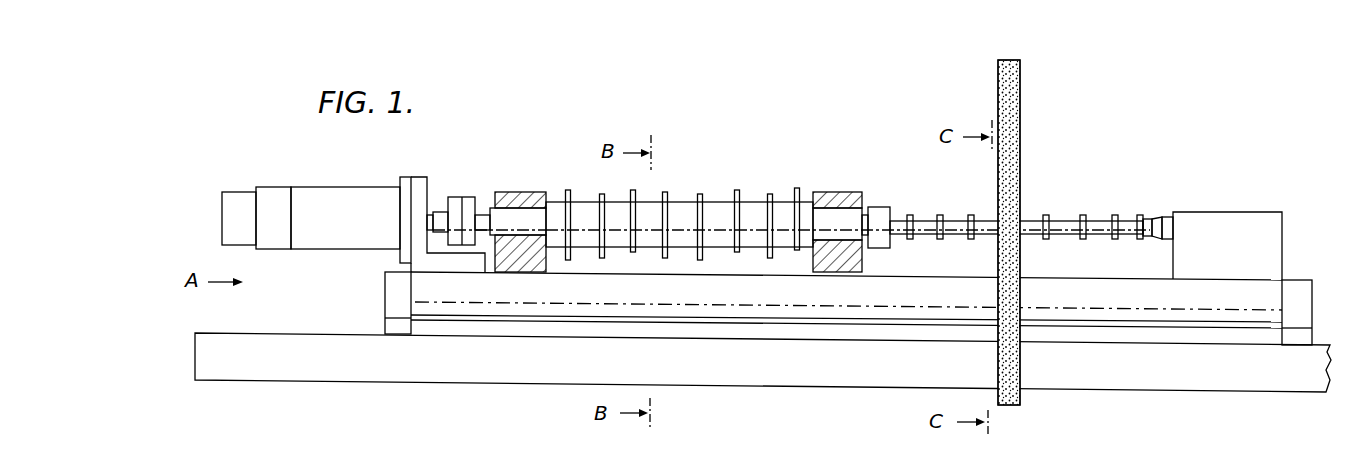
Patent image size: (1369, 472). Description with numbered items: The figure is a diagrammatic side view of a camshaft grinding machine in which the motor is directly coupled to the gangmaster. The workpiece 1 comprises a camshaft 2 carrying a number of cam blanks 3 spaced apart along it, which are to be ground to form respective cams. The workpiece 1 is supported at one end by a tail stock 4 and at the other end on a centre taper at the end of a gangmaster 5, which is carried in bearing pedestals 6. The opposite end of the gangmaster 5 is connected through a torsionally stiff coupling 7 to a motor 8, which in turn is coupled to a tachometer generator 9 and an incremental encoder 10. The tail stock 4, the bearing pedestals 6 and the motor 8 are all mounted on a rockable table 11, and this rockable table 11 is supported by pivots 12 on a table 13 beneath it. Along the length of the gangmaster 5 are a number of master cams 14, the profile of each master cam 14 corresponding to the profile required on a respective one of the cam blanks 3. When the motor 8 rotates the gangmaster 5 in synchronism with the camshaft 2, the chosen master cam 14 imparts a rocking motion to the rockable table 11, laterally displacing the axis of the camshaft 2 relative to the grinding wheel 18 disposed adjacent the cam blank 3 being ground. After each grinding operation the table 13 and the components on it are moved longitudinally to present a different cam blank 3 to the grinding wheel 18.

The workpiece 1 is at (1073, 212).
The camshaft 2 is at (1062, 238).
The cam blanks 3 is at (971, 206).
The tail stock 4 is at (1220, 215).
The gangmaster 5 is at (717, 206).
The bearing pedestals 6 is at (512, 192).
The torsionally stiff coupling 7 is at (462, 198).
The motor 8 is at (325, 198).
The tachometer generator 9 is at (272, 196).
The incremental encoder 10 is at (231, 196).
The rockable table 11 is at (485, 312).
The pivots 12 is at (385, 288).
The table 13 is at (785, 378).
The master cams 14 is at (600, 186).
The grinding wheel 18 is at (1020, 96).